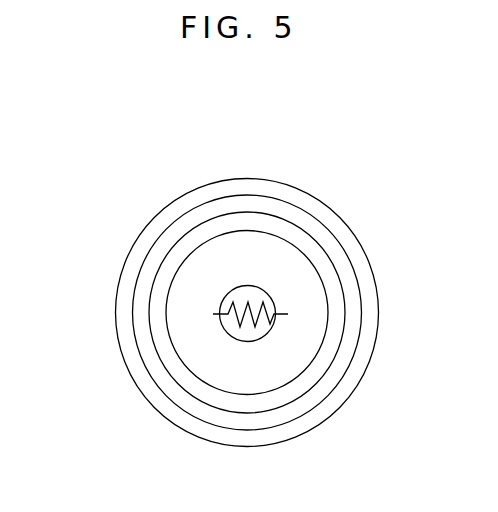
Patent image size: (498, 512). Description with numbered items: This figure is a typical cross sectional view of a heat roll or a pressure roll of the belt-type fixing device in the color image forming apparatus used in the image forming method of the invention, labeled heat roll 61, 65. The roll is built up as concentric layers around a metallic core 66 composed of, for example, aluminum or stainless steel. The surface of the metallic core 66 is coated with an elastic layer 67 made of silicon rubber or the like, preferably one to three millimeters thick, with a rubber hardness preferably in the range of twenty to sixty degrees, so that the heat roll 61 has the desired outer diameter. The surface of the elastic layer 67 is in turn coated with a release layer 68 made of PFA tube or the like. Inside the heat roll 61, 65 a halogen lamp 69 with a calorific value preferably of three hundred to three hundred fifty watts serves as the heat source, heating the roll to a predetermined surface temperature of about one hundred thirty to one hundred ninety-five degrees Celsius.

The heat roll 61 is at (143, 177).
The heater assembly 65 is at (143, 177).
The metallic core 66 is at (287, 232).
The elastic layer 67 is at (322, 233).
The release layer 68 is at (352, 247).
The halogen lamp 69 is at (262, 338).